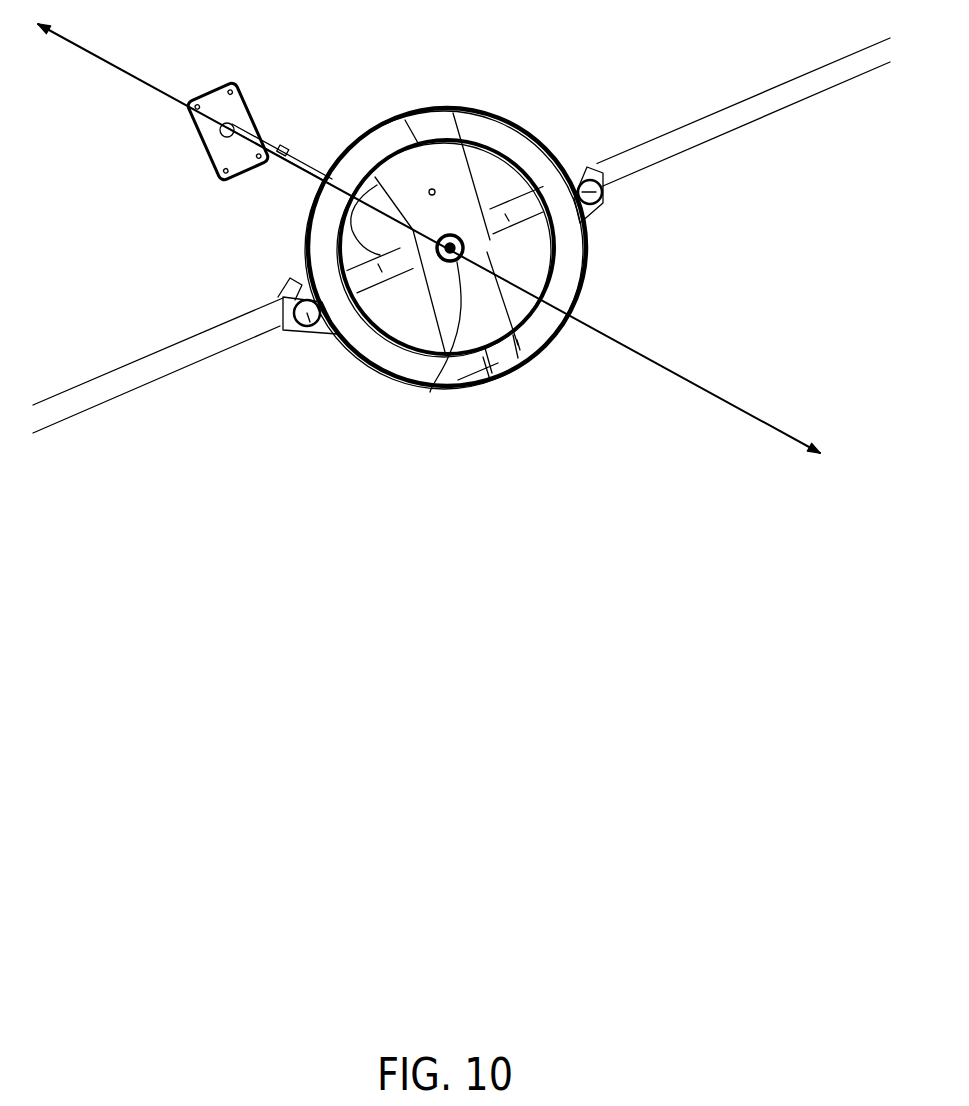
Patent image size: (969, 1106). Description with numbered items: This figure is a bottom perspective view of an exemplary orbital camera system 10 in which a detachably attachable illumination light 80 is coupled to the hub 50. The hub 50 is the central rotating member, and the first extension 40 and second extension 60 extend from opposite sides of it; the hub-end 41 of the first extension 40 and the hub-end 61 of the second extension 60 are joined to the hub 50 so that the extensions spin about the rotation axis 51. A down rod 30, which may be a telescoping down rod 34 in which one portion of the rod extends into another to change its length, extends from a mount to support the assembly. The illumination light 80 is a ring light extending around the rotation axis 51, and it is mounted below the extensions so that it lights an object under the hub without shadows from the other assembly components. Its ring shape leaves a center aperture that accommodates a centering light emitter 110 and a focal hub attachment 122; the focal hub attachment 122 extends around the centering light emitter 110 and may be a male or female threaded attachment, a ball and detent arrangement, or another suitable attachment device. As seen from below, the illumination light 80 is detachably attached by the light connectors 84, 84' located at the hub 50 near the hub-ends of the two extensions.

The orbital camera system 10 is at (536, 93).
The down rod 30 is at (187, 112).
The telescoping down rod 34 is at (283, 152).
The first extension 40 is at (230, 333).
The hub-end of the first extension 41 is at (283, 337).
The hub 50 is at (340, 220).
The rotation axis 51 is at (687, 382).
The second extension 60 is at (715, 123).
The hub-end of the second extension 61 is at (603, 182).
The illumination light 80 is at (550, 295).
The light connector 84 is at (325, 370).
The light connector 84' is at (626, 242).
The centering light emitter 110 is at (445, 353).
The focal hub attachment 122 is at (498, 362).